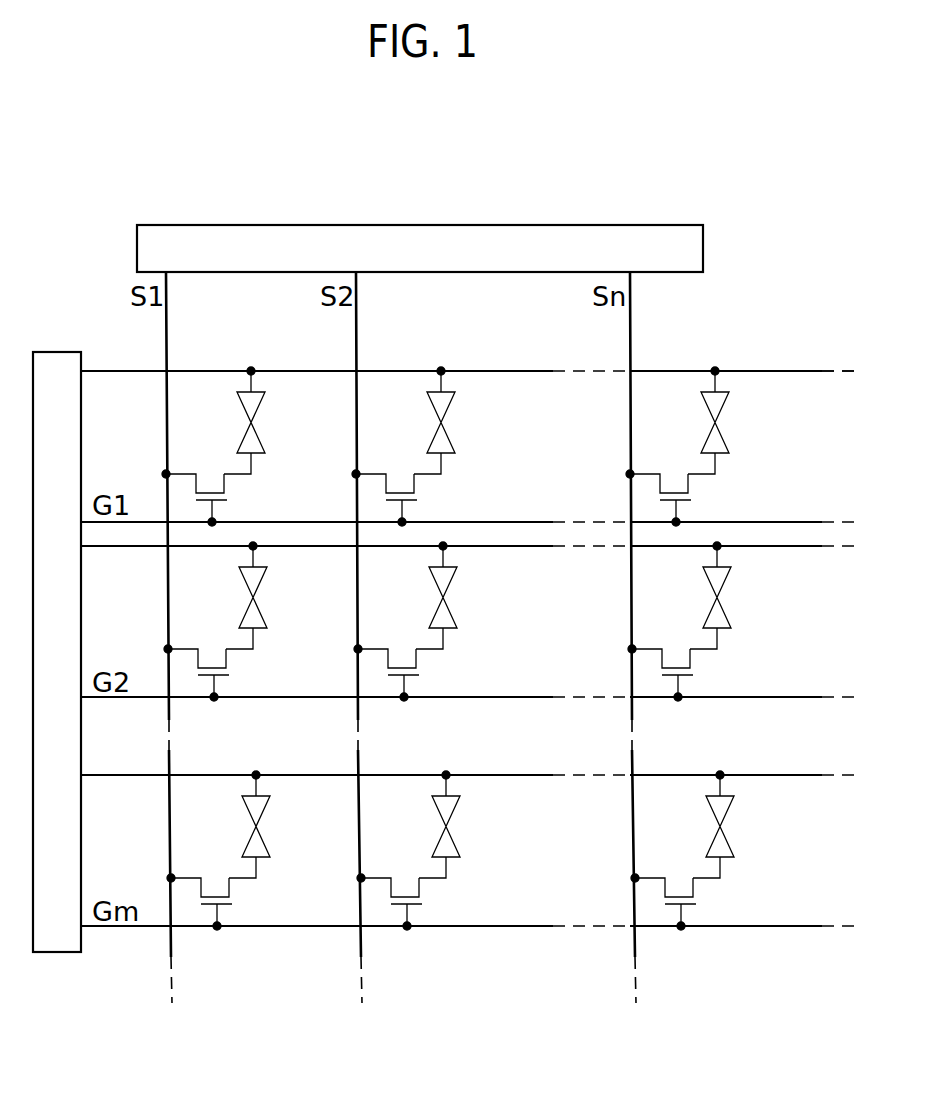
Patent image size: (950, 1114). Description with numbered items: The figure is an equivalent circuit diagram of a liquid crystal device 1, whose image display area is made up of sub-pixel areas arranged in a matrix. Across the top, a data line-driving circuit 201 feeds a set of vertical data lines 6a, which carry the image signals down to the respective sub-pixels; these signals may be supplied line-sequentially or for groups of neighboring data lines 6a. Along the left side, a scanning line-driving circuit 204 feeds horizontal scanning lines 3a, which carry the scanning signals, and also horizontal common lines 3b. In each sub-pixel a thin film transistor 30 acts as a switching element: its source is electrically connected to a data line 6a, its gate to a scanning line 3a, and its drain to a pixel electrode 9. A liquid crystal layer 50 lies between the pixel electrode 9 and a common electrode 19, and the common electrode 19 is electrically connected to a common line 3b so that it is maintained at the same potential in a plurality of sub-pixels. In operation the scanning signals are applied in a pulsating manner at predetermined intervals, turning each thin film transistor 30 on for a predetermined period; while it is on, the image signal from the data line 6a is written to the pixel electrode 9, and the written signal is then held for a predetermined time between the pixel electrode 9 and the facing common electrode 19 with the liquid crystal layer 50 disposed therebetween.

The liquid crystal device 1 is at (803, 342).
The data line-driving circuit 201 is at (703, 238).
The scanning line-driving circuit 204 is at (60, 352).
The scanning line 3a is at (146, 522).
The common line 3b is at (110, 371).
The data line 6a is at (167, 332).
The common electrode 19 is at (252, 383).
The liquid crystal layer 50 is at (228, 420).
The pixel electrode 9 is at (252, 464).
The thin film transistor 30 is at (233, 498).